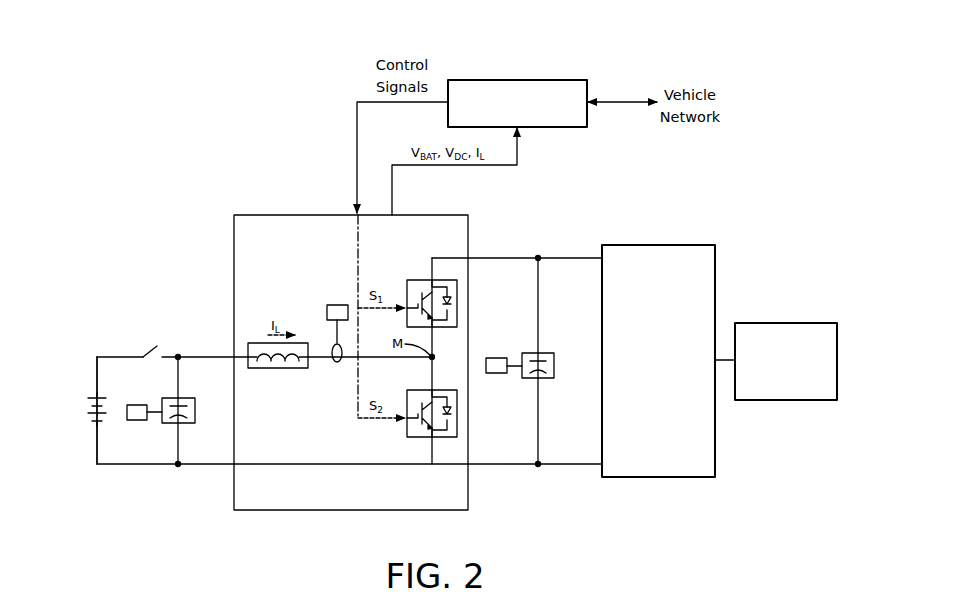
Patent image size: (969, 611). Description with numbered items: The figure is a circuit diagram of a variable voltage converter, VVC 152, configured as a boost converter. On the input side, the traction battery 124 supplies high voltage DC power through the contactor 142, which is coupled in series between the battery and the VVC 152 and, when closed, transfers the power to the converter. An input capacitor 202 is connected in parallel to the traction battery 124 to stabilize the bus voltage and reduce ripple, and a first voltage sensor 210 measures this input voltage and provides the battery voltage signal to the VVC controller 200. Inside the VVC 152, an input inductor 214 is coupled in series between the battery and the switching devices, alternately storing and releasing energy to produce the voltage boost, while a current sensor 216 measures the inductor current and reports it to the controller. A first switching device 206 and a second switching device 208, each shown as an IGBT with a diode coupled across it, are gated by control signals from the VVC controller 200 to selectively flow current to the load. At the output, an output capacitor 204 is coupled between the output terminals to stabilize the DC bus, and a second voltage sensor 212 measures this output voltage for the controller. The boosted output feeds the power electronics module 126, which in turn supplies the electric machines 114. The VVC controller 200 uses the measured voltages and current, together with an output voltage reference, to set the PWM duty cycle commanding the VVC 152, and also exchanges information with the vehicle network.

The VVC controller 200 is at (518, 80).
The VVC 152 is at (353, 510).
The contactor 142 is at (153, 351).
The traction battery 124 is at (88, 408).
The first voltage sensor 210 is at (137, 405).
The input capacitor 202 is at (188, 398).
The input inductor 214 is at (278, 368).
The current sensor 216 is at (337, 305).
The first switching device 206 is at (422, 280).
The second switching device 208 is at (422, 390).
The second voltage sensor 212 is at (497, 358).
The output capacitor 204 is at (547, 353).
The power electronics module 126 is at (642, 245).
The electric machines 114 is at (770, 323).